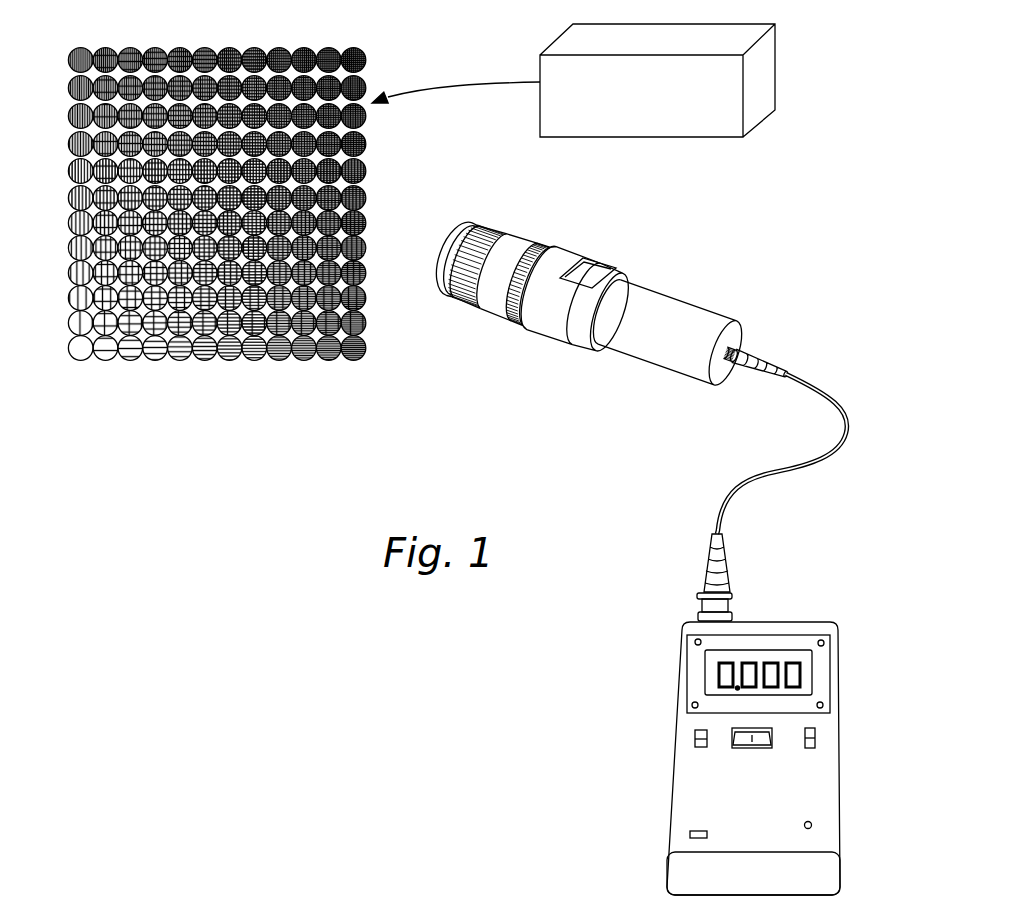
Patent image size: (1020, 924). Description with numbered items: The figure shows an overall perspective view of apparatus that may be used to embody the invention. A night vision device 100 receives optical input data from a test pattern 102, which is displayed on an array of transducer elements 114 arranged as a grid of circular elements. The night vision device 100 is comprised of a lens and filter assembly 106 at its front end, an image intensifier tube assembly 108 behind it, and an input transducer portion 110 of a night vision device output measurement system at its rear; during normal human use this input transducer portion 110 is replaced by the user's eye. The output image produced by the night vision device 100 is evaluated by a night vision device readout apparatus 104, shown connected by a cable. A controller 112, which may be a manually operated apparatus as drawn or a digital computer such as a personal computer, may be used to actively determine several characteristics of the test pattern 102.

The night vision device 100 is at (592, 327).
The test pattern 102 is at (237, 33).
The night vision device readout apparatus 104 is at (828, 580).
The lens and filter assembly 106 is at (480, 310).
The image intensifier tube assembly 108 is at (572, 333).
The input transducer portion 110 is at (662, 367).
The controller 112 is at (763, 73).
The array of transducer elements 114 is at (212, 392).